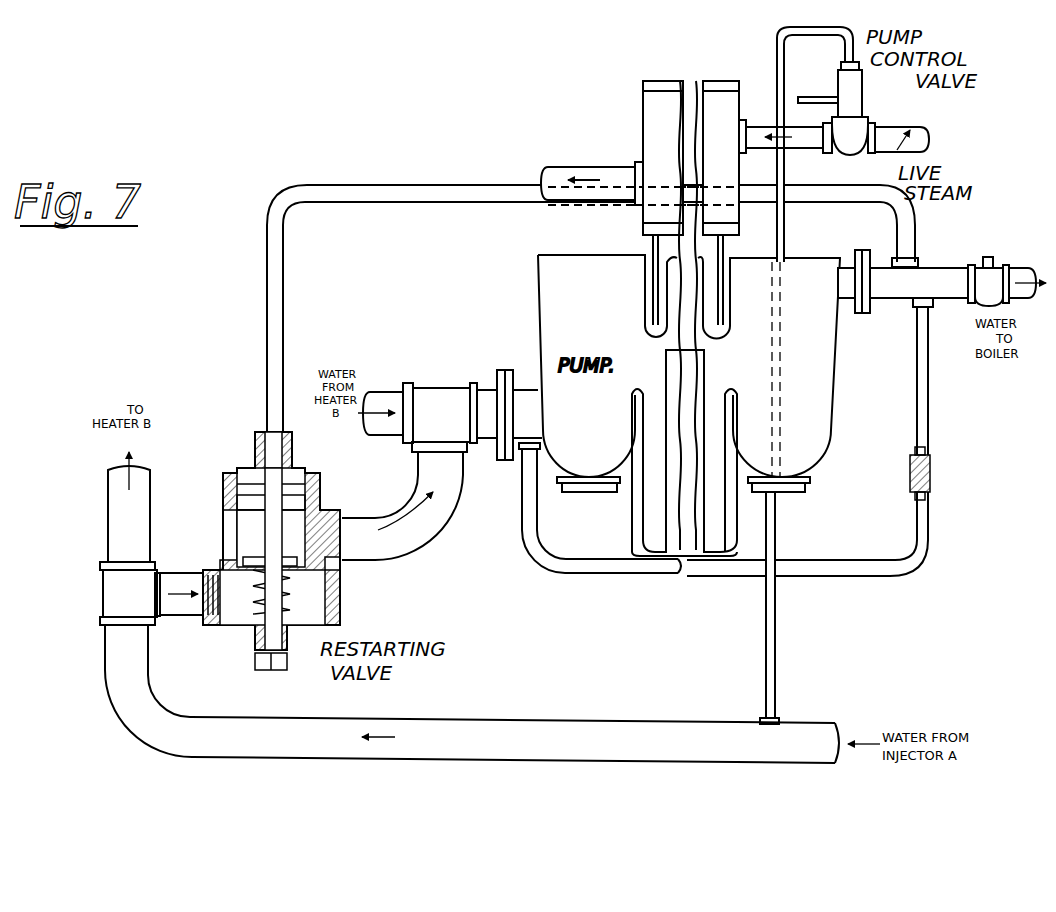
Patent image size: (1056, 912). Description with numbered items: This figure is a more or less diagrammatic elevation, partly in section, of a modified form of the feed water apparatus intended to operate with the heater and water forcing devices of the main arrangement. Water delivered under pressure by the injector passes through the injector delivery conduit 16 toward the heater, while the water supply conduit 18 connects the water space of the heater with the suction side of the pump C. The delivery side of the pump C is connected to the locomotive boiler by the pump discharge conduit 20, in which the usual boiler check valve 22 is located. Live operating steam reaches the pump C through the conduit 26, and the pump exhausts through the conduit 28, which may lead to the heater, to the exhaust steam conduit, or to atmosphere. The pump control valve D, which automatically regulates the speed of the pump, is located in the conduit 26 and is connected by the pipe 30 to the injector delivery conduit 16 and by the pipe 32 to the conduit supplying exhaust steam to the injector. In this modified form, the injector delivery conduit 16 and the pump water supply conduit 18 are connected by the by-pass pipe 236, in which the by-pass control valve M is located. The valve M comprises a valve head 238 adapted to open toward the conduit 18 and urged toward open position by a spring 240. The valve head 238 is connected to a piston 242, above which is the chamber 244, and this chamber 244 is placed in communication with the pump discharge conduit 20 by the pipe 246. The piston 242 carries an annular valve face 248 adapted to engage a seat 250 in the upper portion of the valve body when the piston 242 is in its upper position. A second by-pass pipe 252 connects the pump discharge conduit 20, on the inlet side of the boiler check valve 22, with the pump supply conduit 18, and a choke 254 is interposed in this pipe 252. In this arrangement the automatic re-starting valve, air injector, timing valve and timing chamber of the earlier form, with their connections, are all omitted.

The delivery conduit 16 is at (120, 510).
The water supply conduit 18 is at (385, 402).
The delivery conduit 20 is at (922, 272).
The boiler check valve 22 is at (992, 272).
The conduit 26 is at (904, 135).
The conduit 28 is at (566, 171).
The pipe 30 is at (782, 182).
The pipe 32 is at (820, 97).
The pump C is at (820, 406).
The pump control valve D is at (852, 88).
The by-pass control valve M is at (275, 549).
The by-pass pipe 236 is at (426, 531).
The valve head 238 is at (248, 557).
The spring 240 is at (298, 597).
The piston 242 is at (316, 492).
The chamber 244 is at (258, 468).
The pipe 246 is at (281, 280).
The annular valve face 248 is at (237, 499).
The seat 250 is at (290, 485).
The by-pass pipe 252 is at (925, 406).
The choke 254 is at (931, 473).